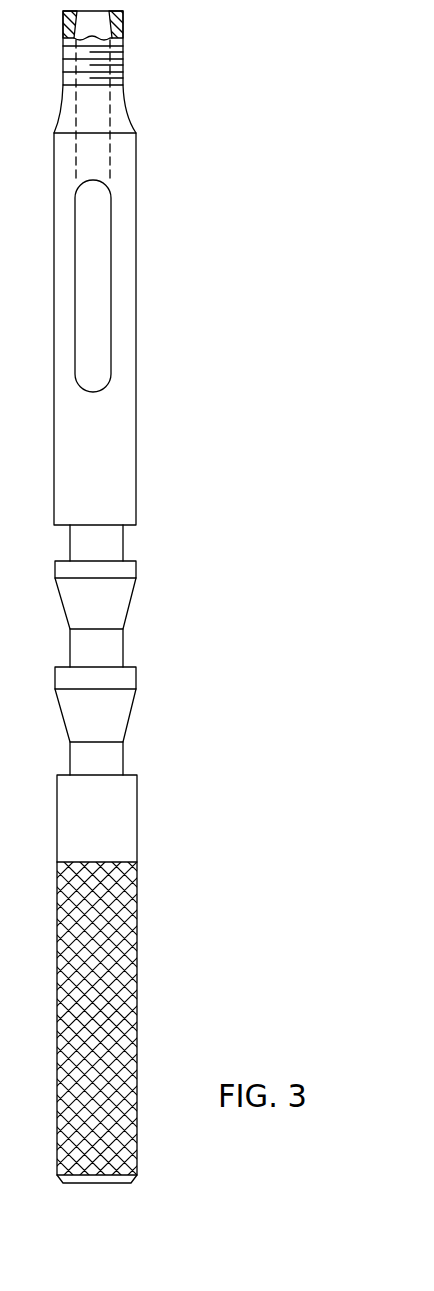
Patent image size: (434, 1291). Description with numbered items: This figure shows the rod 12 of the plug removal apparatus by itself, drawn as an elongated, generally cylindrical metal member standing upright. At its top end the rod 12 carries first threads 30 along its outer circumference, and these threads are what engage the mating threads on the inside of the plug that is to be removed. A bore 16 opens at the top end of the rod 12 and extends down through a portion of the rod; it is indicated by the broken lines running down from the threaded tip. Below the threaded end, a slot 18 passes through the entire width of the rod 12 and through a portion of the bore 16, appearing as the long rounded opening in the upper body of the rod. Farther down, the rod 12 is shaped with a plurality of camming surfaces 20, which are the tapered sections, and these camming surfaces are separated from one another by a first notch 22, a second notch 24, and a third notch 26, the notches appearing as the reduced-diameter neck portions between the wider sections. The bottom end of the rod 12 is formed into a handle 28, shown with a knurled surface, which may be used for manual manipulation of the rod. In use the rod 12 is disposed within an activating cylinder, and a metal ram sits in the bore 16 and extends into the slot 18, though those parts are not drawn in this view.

The rod 12 is at (125, 476).
The bore 16 is at (100, 110).
The slot 18 is at (108, 302).
The camming surfaces 20 is at (117, 600).
The first notch 22 is at (112, 757).
The second notch 24 is at (110, 648).
The third notch 26 is at (110, 541).
The handle 28 is at (132, 987).
The first threads 30 is at (132, 33).